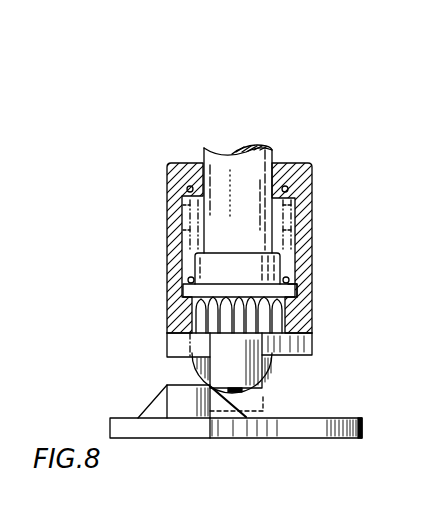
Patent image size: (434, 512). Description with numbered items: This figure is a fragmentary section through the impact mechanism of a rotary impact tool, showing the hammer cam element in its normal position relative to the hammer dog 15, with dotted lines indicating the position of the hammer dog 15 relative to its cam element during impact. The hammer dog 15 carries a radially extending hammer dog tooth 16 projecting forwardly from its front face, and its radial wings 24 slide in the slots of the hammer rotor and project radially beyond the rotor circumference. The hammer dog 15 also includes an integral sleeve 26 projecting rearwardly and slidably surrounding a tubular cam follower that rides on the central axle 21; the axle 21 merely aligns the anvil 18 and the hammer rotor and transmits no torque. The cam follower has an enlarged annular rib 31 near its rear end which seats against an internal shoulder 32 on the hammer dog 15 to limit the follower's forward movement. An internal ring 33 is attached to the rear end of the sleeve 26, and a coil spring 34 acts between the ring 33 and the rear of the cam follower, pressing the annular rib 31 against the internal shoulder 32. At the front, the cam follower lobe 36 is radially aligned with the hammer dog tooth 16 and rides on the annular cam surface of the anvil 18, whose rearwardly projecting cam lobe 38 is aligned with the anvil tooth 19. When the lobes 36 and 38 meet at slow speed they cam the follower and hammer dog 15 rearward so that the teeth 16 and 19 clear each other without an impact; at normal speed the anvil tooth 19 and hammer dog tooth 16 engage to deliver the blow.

The hammer dog 15 is at (303, 262).
The hammer dog tooth 16 is at (249, 413).
The anvil 18 is at (379, 408).
The anvil tooth 19 is at (186, 400).
The axle 21 is at (221, 163).
The radial wings 24 is at (253, 345).
The sleeve 26 is at (256, 233).
The annular rib 31 is at (298, 295).
The internal shoulder 32 is at (183, 288).
The internal ring 33 is at (283, 176).
The coil spring 34 is at (288, 193).
The cam follower lobe 36 is at (263, 387).
The cam lobe 38 is at (162, 400).